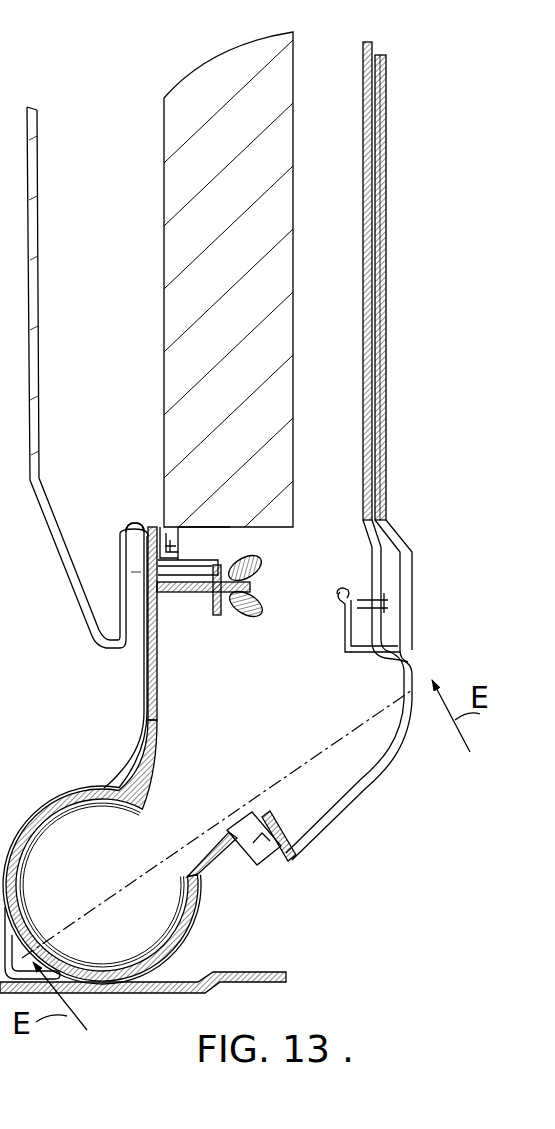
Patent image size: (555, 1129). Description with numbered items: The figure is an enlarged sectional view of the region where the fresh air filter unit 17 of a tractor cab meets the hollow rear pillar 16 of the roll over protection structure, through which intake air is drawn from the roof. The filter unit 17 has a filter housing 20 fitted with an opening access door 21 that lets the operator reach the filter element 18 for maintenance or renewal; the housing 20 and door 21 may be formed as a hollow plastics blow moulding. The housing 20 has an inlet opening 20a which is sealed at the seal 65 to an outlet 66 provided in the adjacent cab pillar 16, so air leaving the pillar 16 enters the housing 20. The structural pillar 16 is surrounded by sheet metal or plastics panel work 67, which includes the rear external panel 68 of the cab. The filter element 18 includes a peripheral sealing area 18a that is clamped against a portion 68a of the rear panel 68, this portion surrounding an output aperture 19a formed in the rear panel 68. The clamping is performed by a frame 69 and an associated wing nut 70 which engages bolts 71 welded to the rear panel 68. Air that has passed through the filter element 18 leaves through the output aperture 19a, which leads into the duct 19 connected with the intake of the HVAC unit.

The rear pillar 16 is at (197, 928).
The fresh air filter unit 17 is at (407, 352).
The filter element 18 is at (199, 99).
The peripheral sealing area 18a is at (168, 543).
The duct 19 is at (87, 447).
The output aperture 19a is at (152, 537).
The filter housing 20 is at (407, 658).
The inlet opening 20a is at (248, 778).
The access door 21 is at (380, 377).
The seal 65 is at (313, 850).
The outlet 66 is at (228, 858).
The panel work 67 is at (237, 980).
The rear external panel 68 is at (150, 651).
The portion of the rear panel 68a is at (147, 548).
The frame 69 is at (223, 553).
The wing nut 70 is at (252, 608).
The bolt 71 is at (195, 587).